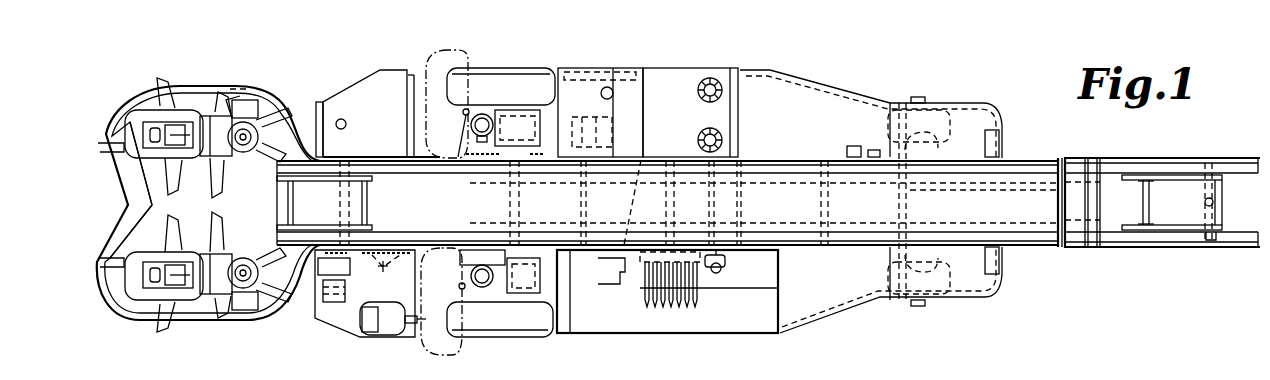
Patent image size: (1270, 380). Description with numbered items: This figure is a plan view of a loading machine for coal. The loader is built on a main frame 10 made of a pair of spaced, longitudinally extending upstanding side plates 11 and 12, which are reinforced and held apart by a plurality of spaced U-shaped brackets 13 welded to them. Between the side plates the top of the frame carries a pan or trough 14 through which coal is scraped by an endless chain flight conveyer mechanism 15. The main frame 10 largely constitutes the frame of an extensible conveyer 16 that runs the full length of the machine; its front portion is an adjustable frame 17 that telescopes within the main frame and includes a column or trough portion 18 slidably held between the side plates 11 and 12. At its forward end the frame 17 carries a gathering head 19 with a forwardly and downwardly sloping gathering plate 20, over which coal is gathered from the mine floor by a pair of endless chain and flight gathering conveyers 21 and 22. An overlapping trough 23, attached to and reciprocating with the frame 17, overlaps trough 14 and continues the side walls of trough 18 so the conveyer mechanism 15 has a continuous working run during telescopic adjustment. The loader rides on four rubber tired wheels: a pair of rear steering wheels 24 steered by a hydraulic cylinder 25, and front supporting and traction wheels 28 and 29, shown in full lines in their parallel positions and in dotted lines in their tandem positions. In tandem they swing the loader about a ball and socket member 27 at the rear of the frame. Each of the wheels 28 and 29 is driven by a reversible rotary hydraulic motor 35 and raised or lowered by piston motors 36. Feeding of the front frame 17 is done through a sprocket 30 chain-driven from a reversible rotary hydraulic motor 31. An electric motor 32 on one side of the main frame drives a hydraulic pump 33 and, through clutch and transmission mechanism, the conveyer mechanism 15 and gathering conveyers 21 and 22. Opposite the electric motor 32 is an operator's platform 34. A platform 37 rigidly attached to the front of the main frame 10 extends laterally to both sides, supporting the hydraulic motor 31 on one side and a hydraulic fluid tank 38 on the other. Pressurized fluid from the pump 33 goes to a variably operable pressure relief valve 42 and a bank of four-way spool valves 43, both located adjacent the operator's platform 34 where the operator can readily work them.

The main frame 10 is at (797, 153).
The side plate 11 is at (760, 159).
The side plate 12 is at (758, 250).
The U-shaped brackets 13 is at (522, 210).
The pan or trough 14 is at (1112, 187).
The endless chain flight conveyer mechanism 15 is at (318, 262).
The extensible conveyer 16 is at (377, 152).
The adjustable front frame 17 is at (243, 98).
The column or trough portion 18 is at (429, 202).
The gathering head 19 is at (244, 324).
The gathering plate 20 is at (176, 194).
The gathering conveyer 21 is at (133, 302).
The gathering conveyer 22 is at (135, 102).
The overlapping pan or trough 23 is at (980, 202).
The rear steering wheels 24 is at (950, 112).
The hydraulic cylinder 25 is at (870, 148).
The ball and socket support member 27 is at (1213, 203).
The front supporting and traction wheel 28 is at (535, 80).
The front supporting and traction wheel 29 is at (517, 322).
The sprocket 30 is at (383, 272).
The reversible rotary hydraulic motor 31 is at (336, 302).
The electric motor 32 is at (690, 112).
The hydraulic pump 33 is at (608, 126).
The operator's platform 34 is at (765, 322).
The reversible rotary hydraulic motor 35 is at (558, 135).
The piston motors 36 is at (484, 122).
The platform 37 is at (320, 105).
The tank 38 is at (368, 113).
The pressure relief valve 42 is at (722, 272).
The bank of four-way spool valves 43 is at (633, 288).